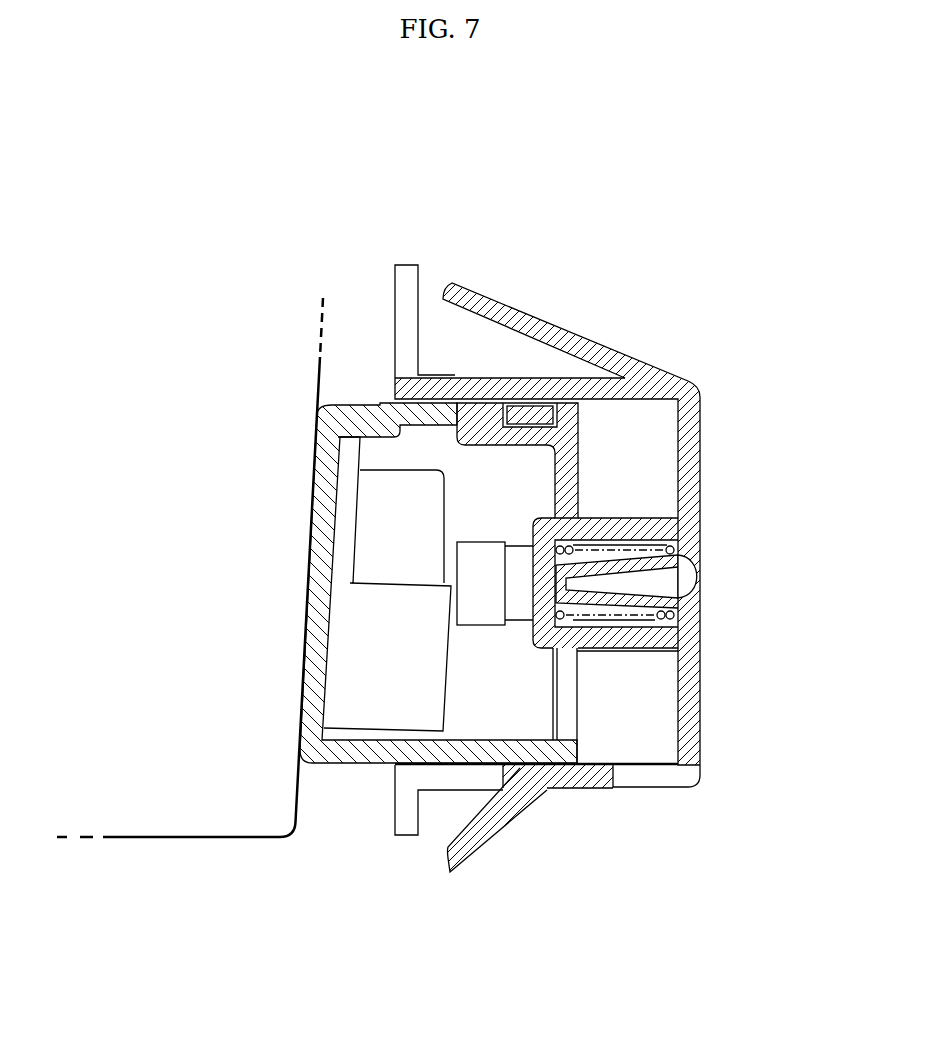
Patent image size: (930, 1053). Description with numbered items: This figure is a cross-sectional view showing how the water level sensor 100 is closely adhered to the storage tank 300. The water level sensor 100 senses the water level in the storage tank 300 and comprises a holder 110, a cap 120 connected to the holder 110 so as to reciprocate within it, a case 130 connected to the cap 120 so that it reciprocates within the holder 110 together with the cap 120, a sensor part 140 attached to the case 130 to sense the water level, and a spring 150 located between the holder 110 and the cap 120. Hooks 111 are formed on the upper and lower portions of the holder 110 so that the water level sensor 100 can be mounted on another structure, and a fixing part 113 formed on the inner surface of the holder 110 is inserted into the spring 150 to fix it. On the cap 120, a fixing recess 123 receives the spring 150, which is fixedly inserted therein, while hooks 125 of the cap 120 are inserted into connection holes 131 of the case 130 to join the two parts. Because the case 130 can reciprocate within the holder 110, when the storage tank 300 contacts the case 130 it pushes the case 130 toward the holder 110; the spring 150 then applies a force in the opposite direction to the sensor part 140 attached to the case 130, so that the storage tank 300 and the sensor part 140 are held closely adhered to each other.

The water level sensor 100 is at (511, 97).
The holder 110 is at (710, 404).
The hooks 111 is at (567, 323).
The fixing part 113 is at (608, 600).
The cap 120 is at (584, 681).
The fixing recess 123 is at (613, 537).
The hooks 125 is at (462, 410).
The case 130 is at (359, 392).
The connection holes 131 is at (463, 403).
The sensor part 140 is at (366, 746).
The spring 150 is at (640, 540).
The storage tank 300 is at (185, 852).